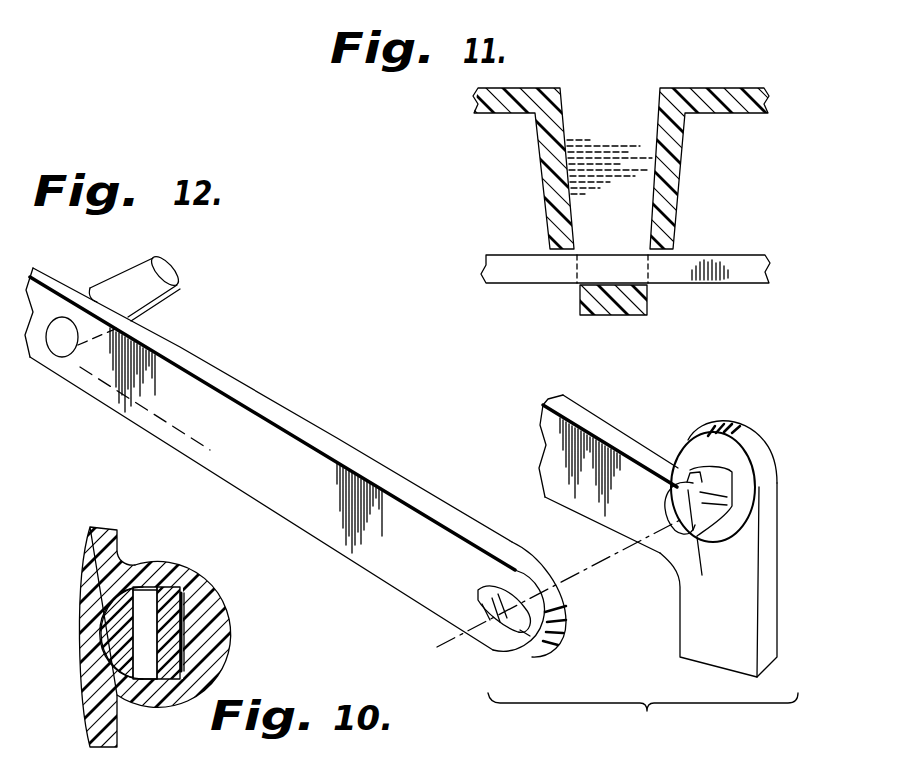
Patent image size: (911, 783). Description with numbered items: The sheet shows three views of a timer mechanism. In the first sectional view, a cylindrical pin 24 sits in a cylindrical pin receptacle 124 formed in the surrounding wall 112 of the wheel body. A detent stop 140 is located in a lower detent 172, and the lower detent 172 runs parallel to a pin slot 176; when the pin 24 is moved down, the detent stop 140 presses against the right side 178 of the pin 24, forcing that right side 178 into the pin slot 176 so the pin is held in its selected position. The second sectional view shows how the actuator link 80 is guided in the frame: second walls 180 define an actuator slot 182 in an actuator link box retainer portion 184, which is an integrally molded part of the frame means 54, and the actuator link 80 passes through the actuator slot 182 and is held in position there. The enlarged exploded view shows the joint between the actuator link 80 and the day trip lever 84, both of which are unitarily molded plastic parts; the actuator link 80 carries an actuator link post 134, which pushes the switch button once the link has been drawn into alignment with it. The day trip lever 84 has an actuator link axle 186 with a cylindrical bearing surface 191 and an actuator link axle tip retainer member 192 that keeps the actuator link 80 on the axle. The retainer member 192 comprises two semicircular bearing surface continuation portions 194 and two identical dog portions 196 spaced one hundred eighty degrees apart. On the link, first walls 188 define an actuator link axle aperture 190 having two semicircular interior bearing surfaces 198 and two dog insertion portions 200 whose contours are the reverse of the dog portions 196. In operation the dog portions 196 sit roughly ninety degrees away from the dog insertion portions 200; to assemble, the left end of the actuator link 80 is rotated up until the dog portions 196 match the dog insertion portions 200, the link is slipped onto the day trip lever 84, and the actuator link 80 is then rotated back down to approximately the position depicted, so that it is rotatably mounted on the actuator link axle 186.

In FIG. 11, the frame means 54 is at (563, 123).
In FIG. 11, the actuator link box retainer portion 184 is at (549, 180).
In FIG. 11, the actuator link 80 is at (523, 275).
In FIG. 12, the actuator link 80 is at (280, 447).
In FIG. 11, the actuator slot 182 is at (653, 255).
In FIG. 11, the second walls 180 is at (637, 281).
In FIG. 12, the actuator link post 134 is at (167, 280).
In FIG. 12, the day trip lever 84 is at (542, 443).
In FIG. 12, the semicircular bearing surface continuation portions 194 is at (702, 575).
In FIG. 12, the actuator link axle 186 is at (720, 483).
In FIG. 12, the cylindrical bearing surface 191 is at (707, 503).
In FIG. 12, the actuator link axle tip retainer member 192 is at (697, 465).
In FIG. 12, the dog portions 196 is at (680, 480).
In FIG. 12, the actuator link axle aperture 190 is at (490, 613).
In FIG. 12, the semicircular interior bearing surfaces 198 is at (516, 590).
In FIG. 12, the first walls 188 is at (497, 620).
In FIG. 12, the dog insertion portions 200 is at (490, 603).
In FIG. 10, the housing wall 112 is at (98, 527).
In FIG. 10, the pin receptacle 124 is at (182, 570).
In FIG. 10, the pin 24 is at (120, 627).
In FIG. 10, the pin slot 176 is at (147, 597).
In FIG. 10, the detent stop 140 is at (190, 615).
In FIG. 10, the lower detent 172 is at (182, 660).
In FIG. 10, the right side 178 is at (163, 643).